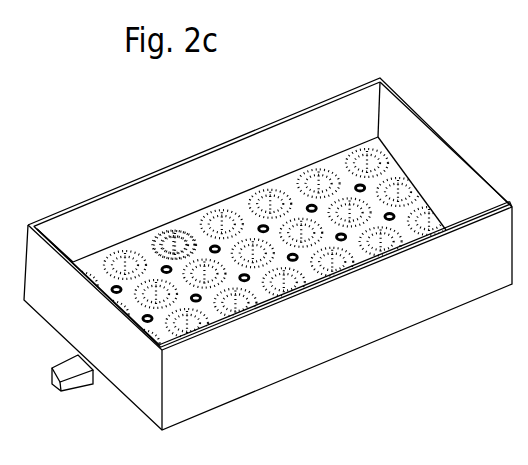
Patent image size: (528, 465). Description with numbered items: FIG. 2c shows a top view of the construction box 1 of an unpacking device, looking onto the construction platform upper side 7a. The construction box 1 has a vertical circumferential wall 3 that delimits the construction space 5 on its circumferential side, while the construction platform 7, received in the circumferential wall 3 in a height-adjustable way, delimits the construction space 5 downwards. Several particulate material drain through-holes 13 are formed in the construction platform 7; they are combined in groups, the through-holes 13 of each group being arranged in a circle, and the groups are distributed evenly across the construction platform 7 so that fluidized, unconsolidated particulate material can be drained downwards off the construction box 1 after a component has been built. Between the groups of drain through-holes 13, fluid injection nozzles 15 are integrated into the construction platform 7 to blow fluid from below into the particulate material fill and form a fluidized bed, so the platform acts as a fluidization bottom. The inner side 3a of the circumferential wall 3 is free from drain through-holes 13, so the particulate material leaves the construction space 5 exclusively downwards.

The construction box 1 is at (265, 229).
The vertical circumferential wall 3 is at (211, 180).
The inner side of the vertical circumferential wall 3a is at (87, 242).
The construction space 5 is at (422, 156).
The construction platform 7 is at (282, 190).
The construction platform upper side 7a is at (397, 171).
The particulate material drain through-holes 13 is at (173, 233).
The fluid injection nozzles 15 is at (164, 267).